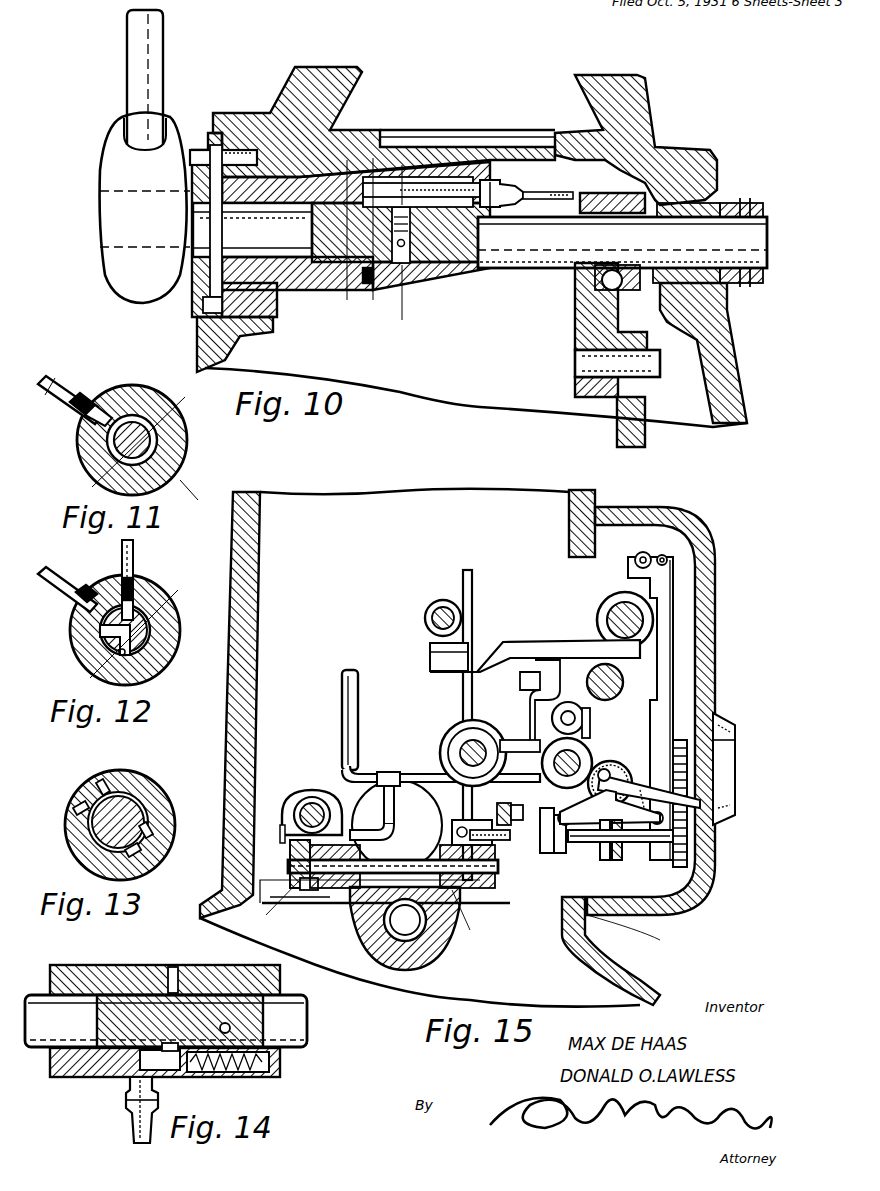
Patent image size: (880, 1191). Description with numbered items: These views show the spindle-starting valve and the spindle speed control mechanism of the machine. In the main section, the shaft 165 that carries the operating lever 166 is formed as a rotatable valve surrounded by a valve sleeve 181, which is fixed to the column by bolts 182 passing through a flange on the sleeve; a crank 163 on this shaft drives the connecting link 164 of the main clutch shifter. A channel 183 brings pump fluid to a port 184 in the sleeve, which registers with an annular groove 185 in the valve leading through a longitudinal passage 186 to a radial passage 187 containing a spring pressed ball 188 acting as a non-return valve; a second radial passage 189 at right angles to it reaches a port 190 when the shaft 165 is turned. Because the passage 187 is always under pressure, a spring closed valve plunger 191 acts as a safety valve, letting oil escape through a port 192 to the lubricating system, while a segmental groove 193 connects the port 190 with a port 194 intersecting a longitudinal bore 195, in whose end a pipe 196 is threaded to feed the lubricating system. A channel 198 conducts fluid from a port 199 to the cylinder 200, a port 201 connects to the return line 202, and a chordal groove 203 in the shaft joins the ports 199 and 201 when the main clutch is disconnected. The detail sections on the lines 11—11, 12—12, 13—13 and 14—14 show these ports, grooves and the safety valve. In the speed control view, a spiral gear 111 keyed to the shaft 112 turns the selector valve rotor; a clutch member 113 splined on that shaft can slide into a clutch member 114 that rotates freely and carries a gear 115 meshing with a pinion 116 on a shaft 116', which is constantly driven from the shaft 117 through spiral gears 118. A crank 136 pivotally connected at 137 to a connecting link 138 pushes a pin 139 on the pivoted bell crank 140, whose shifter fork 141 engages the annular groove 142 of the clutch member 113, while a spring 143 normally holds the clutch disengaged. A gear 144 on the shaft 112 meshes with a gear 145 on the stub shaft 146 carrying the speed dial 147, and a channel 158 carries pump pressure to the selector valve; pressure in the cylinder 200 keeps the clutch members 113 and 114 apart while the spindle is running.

In FIG. 10, the section line 11 is at (352, 166).
In FIG. 10, the section line 12 is at (400, 166).
In FIG. 10, the section line 13 is at (368, 164).
In FIG. 11, the section line 14 is at (116, 440).
In FIG. 15, the spiral gear 111 is at (605, 860).
In FIG. 15, the shaft 112 is at (665, 830).
In FIG. 15, the clutch member 113 is at (530, 905).
In FIG. 15, the clutch member 114 is at (505, 850).
In FIG. 15, the gear 115 is at (500, 808).
In FIG. 15, the pinion 116 is at (420, 871).
In FIG. 15, the shaft 116' is at (373, 910).
In FIG. 15, the shaft 117 is at (312, 795).
In FIG. 15, the spiral gear 118 is at (300, 800).
In FIG. 15, the crank 136 is at (650, 553).
In FIG. 15, the pivotal connection 137 is at (668, 555).
In FIG. 15, the connecting link 138 is at (665, 680).
In FIG. 15, the pin 139 is at (690, 828).
In FIG. 15, the bell crank 140 is at (670, 905).
In FIG. 15, the shifter fork 141 is at (630, 912).
In FIG. 15, the annular groove 142 is at (590, 905).
In FIG. 15, the spring 143 is at (620, 748).
In FIG. 15, the gear 144 is at (690, 858).
In FIG. 15, the gear 145 is at (690, 735).
In FIG. 15, the stub shaft 146 is at (725, 718).
In FIG. 15, the speed dial 147 is at (735, 742).
In FIG. 15, the channel 158 is at (390, 800).
In FIG. 10, the crank 163 is at (575, 311).
In FIG. 10, the connecting link 164 is at (645, 408).
In FIG. 10, the shaft 165 is at (532, 270).
In FIG. 10, the operating lever 166 is at (127, 96).
In FIG. 10, the valve sleeve 181 is at (292, 292).
In FIG. 10, the bolts 182 is at (190, 148).
In FIG. 11, the channel 183 is at (62, 392).
In FIG. 14, the channel 183 is at (132, 1127).
In FIG. 15, the channel 183 is at (342, 724).
In FIG. 11, the port 184 is at (107, 398).
In FIG. 11, the annular groove 185 is at (118, 412).
In FIG. 10, the longitudinal passage 186 is at (395, 270).
In FIG. 11, the longitudinal passage 186 is at (92, 485).
In FIG. 10, the radial passage 187 is at (400, 265).
In FIG. 12, the radial passage 187 is at (150, 640).
In FIG. 10, the spring pressed ball 188 is at (405, 262).
In FIG. 12, the spring pressed ball 188 is at (160, 660).
In FIG. 12, the radial passage 189 is at (110, 655).
In FIG. 13, the port 190 is at (72, 835).
In FIG. 14, the valve plunger 191 is at (160, 1075).
In FIG. 14, the port 192 is at (190, 1078).
In FIG. 13, the segmental groove 193 is at (82, 803).
In FIG. 13, the port 194 is at (122, 775).
In FIG. 10, the longitudinal bore 195 is at (442, 186).
In FIG. 13, the longitudinal bore 195 is at (88, 780).
In FIG. 10, the pipe 196 is at (528, 192).
In FIG. 12, the channel 198 is at (66, 588).
In FIG. 15, the channel 198 is at (475, 618).
In FIG. 12, the port 199 is at (95, 640).
In FIG. 15, the cylinder 200 is at (505, 868).
In FIG. 12, the port 201 is at (135, 598).
In FIG. 12, the return line 202 is at (135, 578).
In FIG. 12, the chordal groove 203 is at (115, 578).